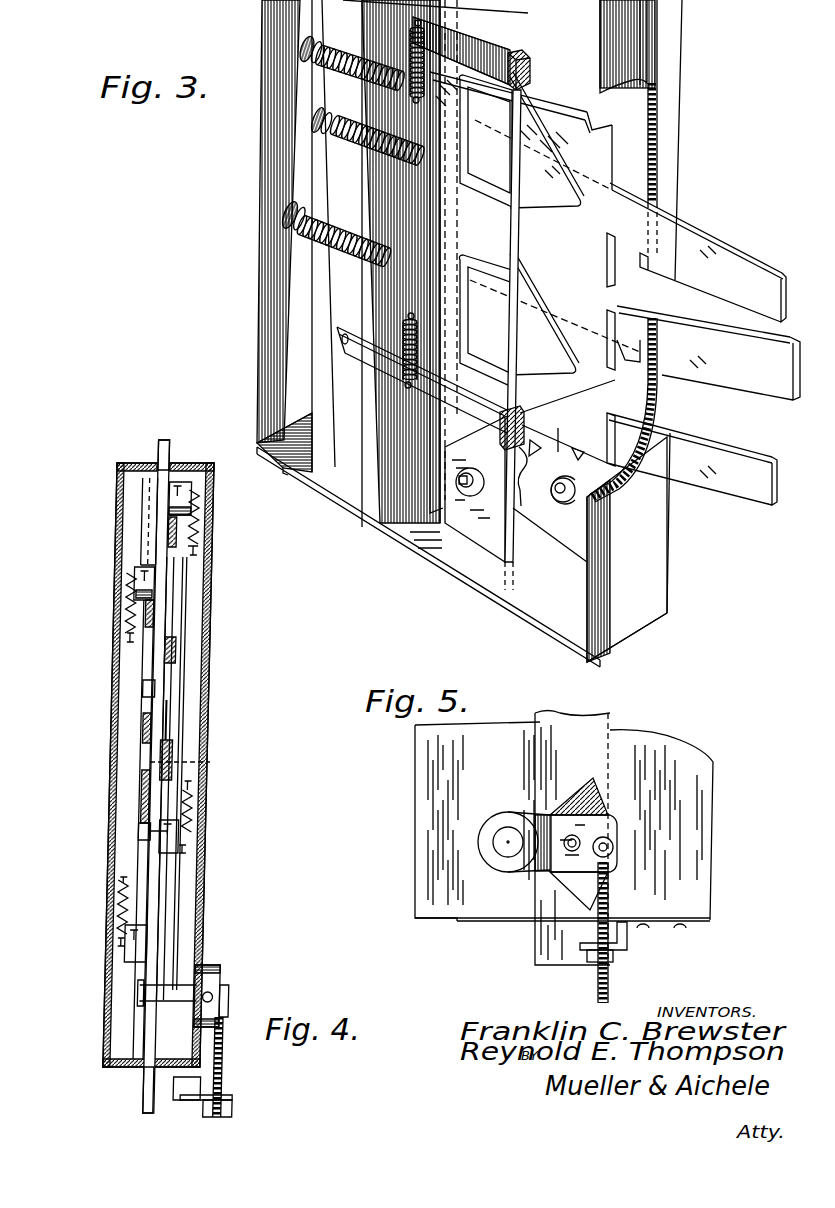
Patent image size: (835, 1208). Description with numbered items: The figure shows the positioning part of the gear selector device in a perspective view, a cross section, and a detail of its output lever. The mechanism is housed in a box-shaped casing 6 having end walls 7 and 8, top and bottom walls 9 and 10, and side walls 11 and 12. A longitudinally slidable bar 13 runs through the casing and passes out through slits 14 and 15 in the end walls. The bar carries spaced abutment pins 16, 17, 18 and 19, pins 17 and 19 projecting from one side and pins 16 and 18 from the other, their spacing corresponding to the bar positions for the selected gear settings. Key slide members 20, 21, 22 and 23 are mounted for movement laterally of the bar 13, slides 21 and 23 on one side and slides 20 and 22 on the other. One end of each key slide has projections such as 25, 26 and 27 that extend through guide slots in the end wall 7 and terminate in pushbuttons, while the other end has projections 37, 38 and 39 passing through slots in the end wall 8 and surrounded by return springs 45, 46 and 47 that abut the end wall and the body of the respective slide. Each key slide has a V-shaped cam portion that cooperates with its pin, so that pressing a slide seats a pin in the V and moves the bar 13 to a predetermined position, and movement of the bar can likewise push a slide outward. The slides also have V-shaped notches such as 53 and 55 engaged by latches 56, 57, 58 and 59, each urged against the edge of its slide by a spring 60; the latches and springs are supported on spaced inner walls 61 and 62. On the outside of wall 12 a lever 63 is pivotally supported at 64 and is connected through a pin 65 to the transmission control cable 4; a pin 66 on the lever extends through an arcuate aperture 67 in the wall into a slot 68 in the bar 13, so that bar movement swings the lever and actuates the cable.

In FIG. 4, the cable 4 is at (238, 1060).
In FIG. 5, the cable 4 is at (612, 898).
In FIG. 3, the box-shaped casing 6 is at (651, 642).
In FIG. 4, the box-shaped casing 6 is at (109, 942).
In FIG. 3, the end wall 7 is at (655, 584).
In FIG. 5, the end wall 7 is at (415, 827).
In FIG. 3, the end wall 8 is at (259, 326).
In FIG. 4, the top wall 9 is at (120, 465).
In FIG. 3, the bottom wall 10 is at (536, 612).
In FIG. 4, the bottom wall 10 is at (132, 1068).
In FIG. 5, the bottom wall 10 is at (476, 920).
In FIG. 4, the side wall 11 is at (119, 770).
In FIG. 4, the side wall 12 is at (212, 815).
In FIG. 3, the longitudinally slidable bar 13 is at (528, 25).
In FIG. 4, the longitudinally slidable bar 13 is at (158, 442).
In FIG. 5, the longitudinally slidable bar 13 is at (540, 950).
In FIG. 4, the slit 14 is at (171, 460).
In FIG. 3, the slit 15 is at (512, 566).
In FIG. 4, the slit 15 is at (159, 1076).
In FIG. 4, the pin 16 is at (178, 570).
In FIG. 4, the pin 17 is at (148, 688).
In FIG. 4, the pin 18 is at (189, 760).
In FIG. 4, the pin 19 is at (148, 828).
In FIG. 4, the key slide member 20 is at (181, 650).
In FIG. 3, the key slide member 21 is at (615, 165).
In FIG. 4, the key slide member 21 is at (156, 725).
In FIG. 3, the key slide member 22 is at (657, 355).
In FIG. 4, the key slide member 22 is at (178, 720).
In FIG. 3, the key slide member 23 is at (558, 450).
In FIG. 4, the key slide member 23 is at (154, 800).
In FIG. 3, the projection 25 is at (726, 262).
In FIG. 3, the projection 26 is at (733, 352).
In FIG. 3, the projection 27 is at (726, 470).
In FIG. 3, the projection 37 is at (300, 56).
In FIG. 3, the projection 38 is at (328, 112).
In FIG. 3, the projection 39 is at (300, 216).
In FIG. 3, the spring 45 is at (300, 46).
In FIG. 3, the spring 46 is at (312, 118).
In FIG. 3, the spring 47 is at (286, 222).
In FIG. 3, the V-shaped notch 53 is at (596, 122).
In FIG. 3, the V-shaped notch 55 is at (578, 451).
In FIG. 4, the latch 56 is at (200, 506).
In FIG. 3, the latch 57 is at (532, 66).
In FIG. 4, the latch 57 is at (146, 580).
In FIG. 4, the latch 58 is at (197, 845).
In FIG. 4, the latch 59 is at (141, 950).
In FIG. 3, the spring 60 is at (410, 60).
In FIG. 4, the spring 60 is at (198, 540).
In FIG. 4, the inner wall 61 is at (147, 855).
In FIG. 4, the inner wall 62 is at (190, 700).
In FIG. 3, the lever 63 is at (525, 503).
In FIG. 4, the lever 63 is at (222, 965).
In FIG. 5, the lever 63 is at (612, 815).
In FIG. 3, the pivot 64 is at (565, 505).
In FIG. 5, the pivot 64 is at (505, 850).
In FIG. 4, the pin 65 is at (238, 985).
In FIG. 5, the pin 65 is at (614, 850).
In FIG. 3, the pin 66 is at (462, 490).
In FIG. 4, the pin 66 is at (153, 1000).
In FIG. 5, the pin 66 is at (570, 855).
In FIG. 3, the arcuate aperture 67 is at (533, 445).
In FIG. 5, the arcuate aperture 67 is at (585, 800).
In FIG. 3, the slot 68 is at (478, 498).